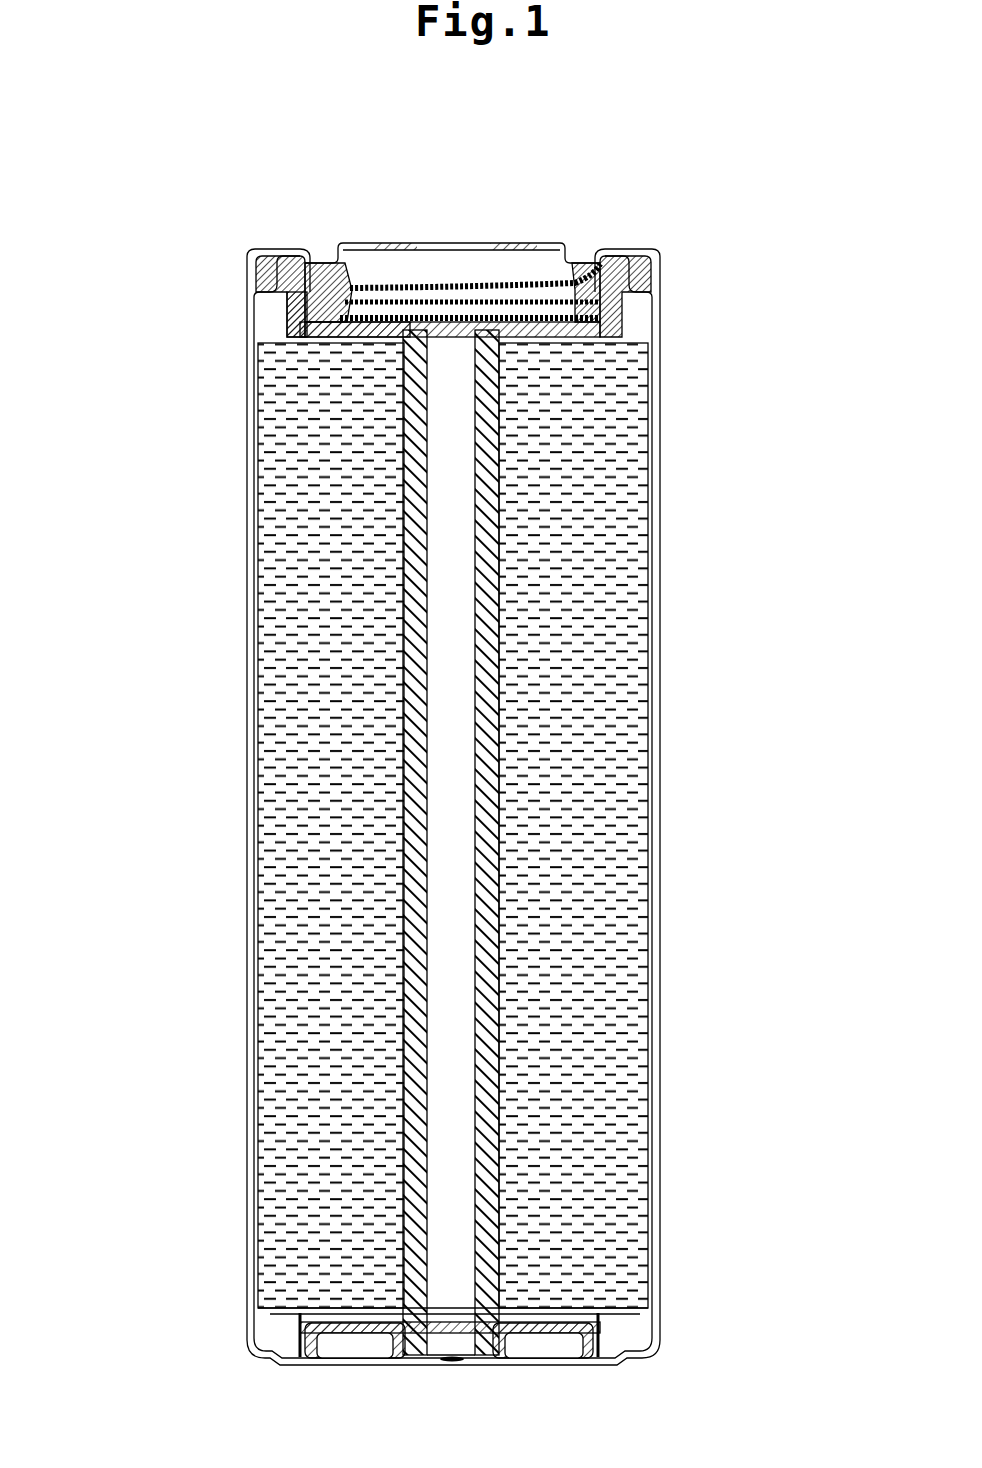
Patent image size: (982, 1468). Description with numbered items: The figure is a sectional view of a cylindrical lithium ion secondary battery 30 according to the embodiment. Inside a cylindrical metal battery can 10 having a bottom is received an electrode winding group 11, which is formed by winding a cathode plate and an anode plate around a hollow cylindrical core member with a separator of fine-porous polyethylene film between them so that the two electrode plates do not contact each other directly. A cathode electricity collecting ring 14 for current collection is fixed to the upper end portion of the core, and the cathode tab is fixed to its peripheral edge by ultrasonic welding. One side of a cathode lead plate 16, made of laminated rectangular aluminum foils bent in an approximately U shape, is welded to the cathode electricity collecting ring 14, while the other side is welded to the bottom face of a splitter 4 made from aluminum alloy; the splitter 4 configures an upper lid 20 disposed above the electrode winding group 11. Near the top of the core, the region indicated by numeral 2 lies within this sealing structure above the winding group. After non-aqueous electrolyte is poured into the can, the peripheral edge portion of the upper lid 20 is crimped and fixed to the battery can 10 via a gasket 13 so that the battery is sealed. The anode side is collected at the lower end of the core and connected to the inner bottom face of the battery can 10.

The safety vent plate 2 is at (372, 277).
The splitter 4 is at (247, 265).
The battery can 10 is at (663, 363).
The electrode winding group 11 is at (618, 435).
The gasket 13 is at (656, 276).
The cathode electricity collecting ring 14 is at (305, 330).
The cathode lead plate 16 is at (287, 300).
The upper lid 20 is at (483, 243).
The cylindrical lithium ion secondary battery 30 is at (403, 198).